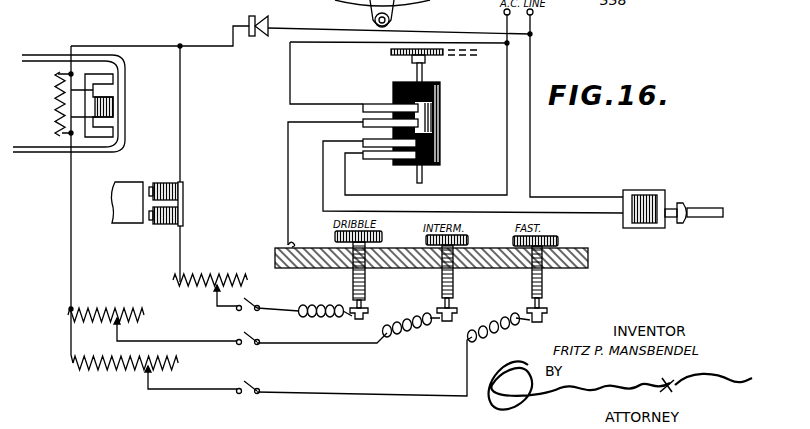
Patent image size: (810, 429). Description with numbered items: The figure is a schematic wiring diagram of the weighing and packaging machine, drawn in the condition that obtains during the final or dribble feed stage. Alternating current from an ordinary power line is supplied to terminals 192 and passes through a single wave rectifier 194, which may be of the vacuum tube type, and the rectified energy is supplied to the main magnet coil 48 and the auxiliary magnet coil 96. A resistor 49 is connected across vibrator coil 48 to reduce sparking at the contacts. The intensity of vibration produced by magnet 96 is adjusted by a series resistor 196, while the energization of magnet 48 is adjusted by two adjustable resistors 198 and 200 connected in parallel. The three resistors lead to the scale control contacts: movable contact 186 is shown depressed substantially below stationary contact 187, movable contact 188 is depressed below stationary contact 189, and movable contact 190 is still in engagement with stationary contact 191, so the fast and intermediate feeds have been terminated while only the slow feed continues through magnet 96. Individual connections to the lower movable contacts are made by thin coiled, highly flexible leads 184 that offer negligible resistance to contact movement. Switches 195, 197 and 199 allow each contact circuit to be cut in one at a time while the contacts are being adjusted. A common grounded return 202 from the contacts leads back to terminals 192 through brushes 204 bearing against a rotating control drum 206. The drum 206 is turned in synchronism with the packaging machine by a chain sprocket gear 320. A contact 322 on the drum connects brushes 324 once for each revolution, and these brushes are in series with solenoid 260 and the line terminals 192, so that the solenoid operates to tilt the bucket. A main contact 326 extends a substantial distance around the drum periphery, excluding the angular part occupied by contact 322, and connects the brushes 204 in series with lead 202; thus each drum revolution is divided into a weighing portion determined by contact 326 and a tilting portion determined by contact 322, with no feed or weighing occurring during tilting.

The main magnet coil 48 is at (105, 100).
The resistor 49 is at (58, 100).
The auxiliary magnet coil 96 is at (178, 183).
The flexible leads 184 is at (412, 332).
The movable contact 186 is at (548, 318).
The stationary contact 187 is at (545, 304).
The movable contact 188 is at (458, 315).
The stationary contact 189 is at (455, 303).
The movable contact 190 is at (366, 312).
The stationary contact 191 is at (358, 302).
The terminals 192 is at (533, 14).
The single wave rectifier 194 is at (266, 22).
The switch 195 is at (256, 305).
The series resistor 196 is at (204, 282).
The switch 197 is at (254, 338).
The adjustable resistor 198 is at (115, 315).
The switch 199 is at (252, 387).
The adjustable resistor 200 is at (113, 363).
The common grounded return 202 is at (288, 196).
The contacts 204 is at (374, 119).
The rotating control drum 206 is at (440, 92).
The solenoid 260 is at (640, 182).
The chain sprocket gear 320 is at (428, 48).
The contact 322 is at (402, 163).
The brushes 324 is at (374, 153).
The main contact 326 is at (432, 118).